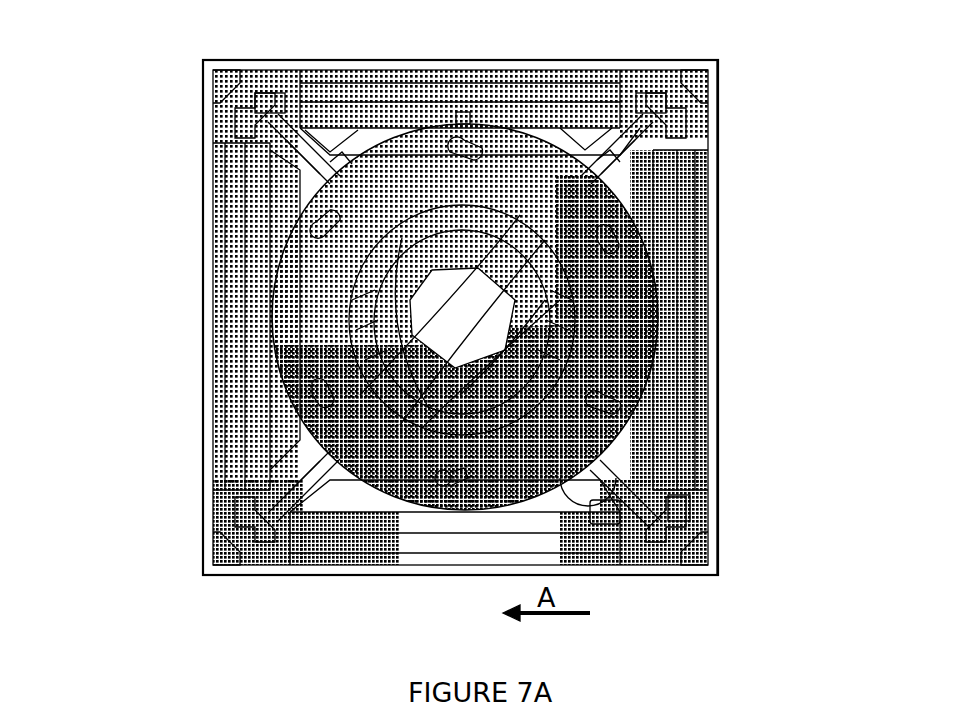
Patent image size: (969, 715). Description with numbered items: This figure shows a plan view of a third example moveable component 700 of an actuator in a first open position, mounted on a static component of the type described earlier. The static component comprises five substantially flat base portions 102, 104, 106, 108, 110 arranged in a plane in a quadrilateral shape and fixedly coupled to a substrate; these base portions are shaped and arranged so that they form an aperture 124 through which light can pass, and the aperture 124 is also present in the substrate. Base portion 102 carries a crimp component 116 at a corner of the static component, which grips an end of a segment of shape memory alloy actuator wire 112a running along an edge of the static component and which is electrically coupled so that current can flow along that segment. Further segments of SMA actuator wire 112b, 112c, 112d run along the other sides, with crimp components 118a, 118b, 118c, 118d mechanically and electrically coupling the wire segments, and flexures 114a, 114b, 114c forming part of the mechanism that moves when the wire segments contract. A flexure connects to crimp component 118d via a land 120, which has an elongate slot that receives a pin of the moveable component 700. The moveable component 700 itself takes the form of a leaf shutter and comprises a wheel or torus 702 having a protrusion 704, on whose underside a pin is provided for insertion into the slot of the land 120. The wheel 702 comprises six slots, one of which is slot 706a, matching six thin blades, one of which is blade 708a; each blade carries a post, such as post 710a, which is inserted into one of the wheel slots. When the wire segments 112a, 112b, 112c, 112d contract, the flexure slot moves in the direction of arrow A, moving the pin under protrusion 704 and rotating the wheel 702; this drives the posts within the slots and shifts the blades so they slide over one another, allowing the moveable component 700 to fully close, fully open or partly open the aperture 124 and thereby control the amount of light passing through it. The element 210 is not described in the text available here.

The moveable component 700 is at (122, 100).
The base portion 102 is at (645, 402).
The base portion 104 is at (590, 147).
The base portion 106 is at (333, 140).
The base portion 108 is at (278, 410).
The base portion 110 is at (332, 490).
The segment of SMA actuator wire 112a is at (672, 255).
The segment of SMA actuator wire 112b is at (403, 102).
The segment of SMA actuator wire 112c is at (232, 228).
The segment of SMA actuator wire 112d is at (372, 530).
The flexure 114a is at (627, 152).
The flexure 114b is at (292, 145).
The flexure 114c is at (300, 477).
The crimp component 116 is at (678, 503).
The crimp component 118a is at (680, 130).
The crimp component 118b is at (250, 110).
The crimp component 118c is at (245, 535).
The crimp component 118d is at (650, 527).
The land 120 is at (600, 512).
The aperture 124 is at (488, 329).
The frame edge 210 is at (710, 347).
The wheel 702 is at (632, 300).
The protrusion 704 is at (592, 473).
The slot 706a is at (472, 480).
The blade 708a is at (487, 402).
The post 710a is at (438, 474).